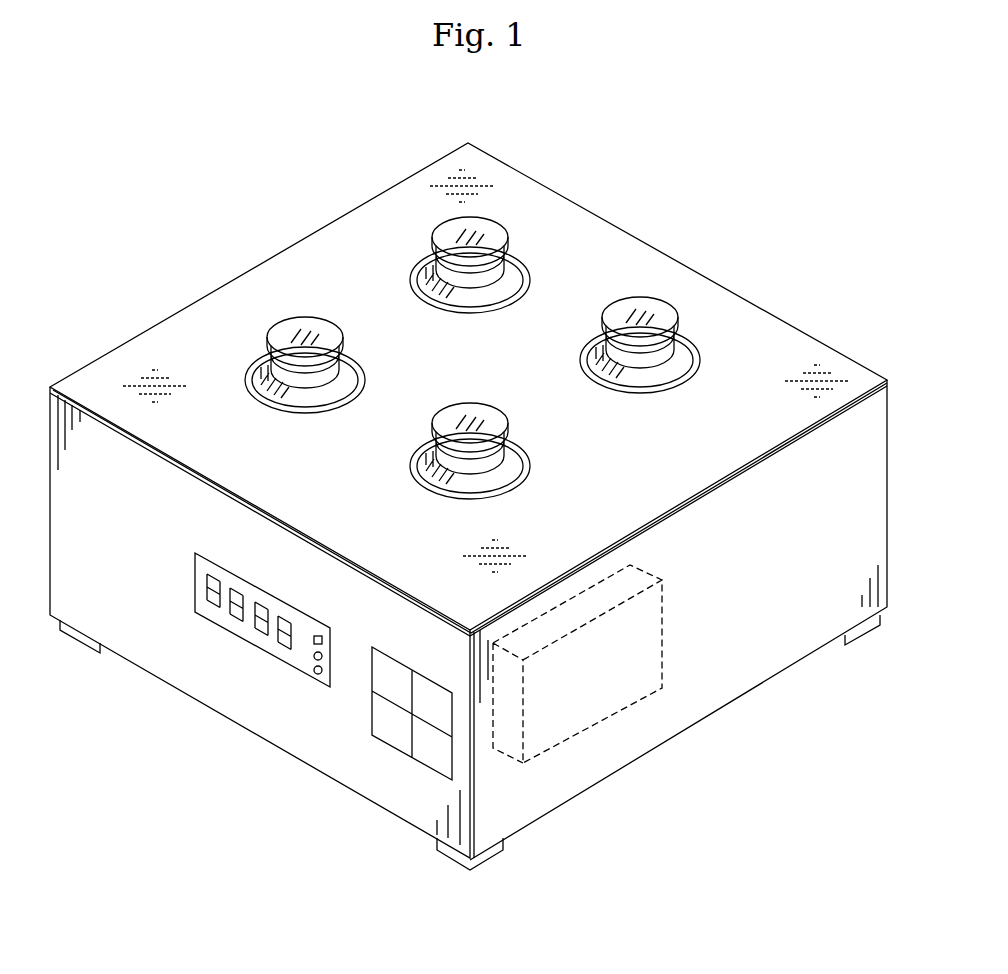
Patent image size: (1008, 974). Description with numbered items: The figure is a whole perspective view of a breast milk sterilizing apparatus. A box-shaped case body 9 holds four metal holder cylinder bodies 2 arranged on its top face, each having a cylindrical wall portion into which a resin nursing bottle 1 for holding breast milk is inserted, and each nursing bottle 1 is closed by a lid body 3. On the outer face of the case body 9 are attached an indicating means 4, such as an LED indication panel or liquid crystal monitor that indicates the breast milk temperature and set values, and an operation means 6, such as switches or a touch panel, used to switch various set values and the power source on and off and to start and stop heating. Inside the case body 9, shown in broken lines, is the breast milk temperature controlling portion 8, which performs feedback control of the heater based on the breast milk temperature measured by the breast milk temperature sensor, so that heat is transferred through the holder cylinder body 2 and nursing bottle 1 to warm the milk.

The nursing bottle 1 is at (479, 294).
The holder cylinder body 2 is at (503, 276).
The lid body 3 is at (484, 232).
The indicating means 4 is at (236, 640).
The operation means 6 is at (387, 764).
The breast milk temperature controlling portion 8 is at (584, 695).
The case body 9 is at (770, 312).